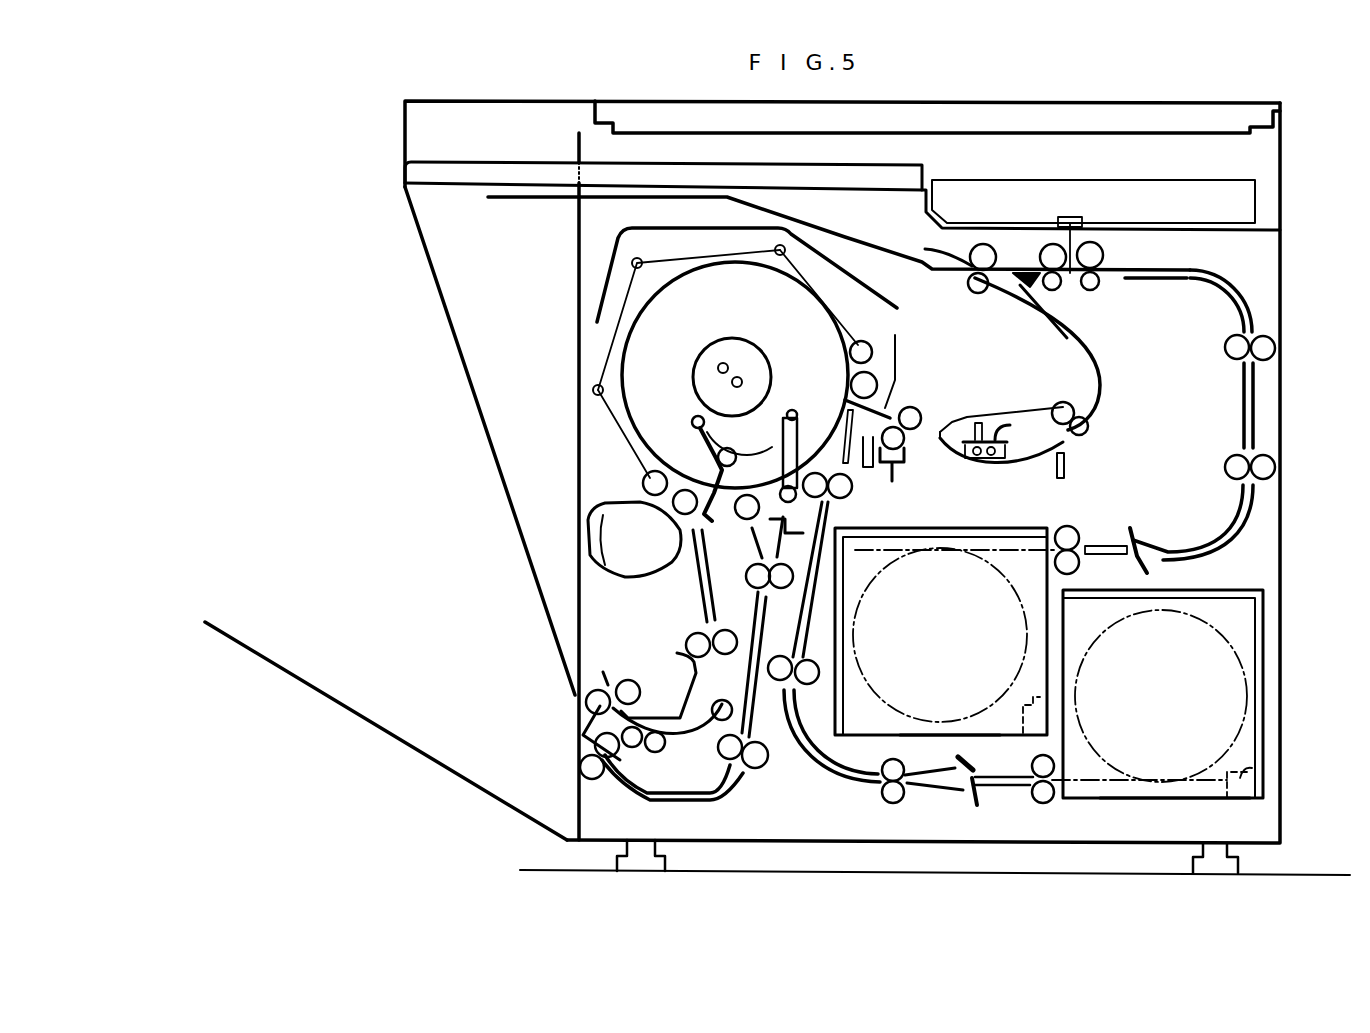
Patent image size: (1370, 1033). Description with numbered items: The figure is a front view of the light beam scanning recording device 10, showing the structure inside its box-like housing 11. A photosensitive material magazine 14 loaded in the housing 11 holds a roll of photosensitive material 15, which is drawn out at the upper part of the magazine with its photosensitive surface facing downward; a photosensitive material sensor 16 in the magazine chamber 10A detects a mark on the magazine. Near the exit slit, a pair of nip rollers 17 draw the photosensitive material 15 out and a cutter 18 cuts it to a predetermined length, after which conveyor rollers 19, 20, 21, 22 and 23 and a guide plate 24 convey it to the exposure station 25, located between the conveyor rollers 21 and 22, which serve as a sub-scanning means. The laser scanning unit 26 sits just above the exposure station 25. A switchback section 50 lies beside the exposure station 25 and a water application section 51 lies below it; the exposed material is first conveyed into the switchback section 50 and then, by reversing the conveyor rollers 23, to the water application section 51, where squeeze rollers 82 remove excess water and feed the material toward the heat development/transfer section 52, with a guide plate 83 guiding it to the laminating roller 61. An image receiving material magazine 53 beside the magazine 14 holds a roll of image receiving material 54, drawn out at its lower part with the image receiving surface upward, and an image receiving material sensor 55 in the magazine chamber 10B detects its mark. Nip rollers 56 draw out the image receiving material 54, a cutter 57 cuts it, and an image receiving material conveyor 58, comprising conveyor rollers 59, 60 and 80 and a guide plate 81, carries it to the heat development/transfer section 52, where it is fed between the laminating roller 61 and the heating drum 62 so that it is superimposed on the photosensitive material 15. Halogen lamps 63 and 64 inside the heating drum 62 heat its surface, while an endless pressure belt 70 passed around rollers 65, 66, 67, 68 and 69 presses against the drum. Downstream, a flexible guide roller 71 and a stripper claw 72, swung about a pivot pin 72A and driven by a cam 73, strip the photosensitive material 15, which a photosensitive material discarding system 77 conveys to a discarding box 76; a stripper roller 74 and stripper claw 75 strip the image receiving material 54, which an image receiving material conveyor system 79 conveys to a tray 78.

The light beam scanning recording device 10 is at (603, 96).
The magazine chamber 10A is at (960, 735).
The magazine chamber 10B is at (1185, 797).
The housing 11 is at (1290, 266).
The photosensitive material magazine 14 is at (785, 773).
The photosensitive material 15 is at (1013, 695).
The photosensitive material sensor 16 is at (1030, 697).
The nip rollers 17 is at (1072, 526).
The cutter 18 is at (1131, 526).
The conveyor roller 19 is at (1272, 474).
The conveyor roller 20 is at (1274, 353).
The conveyor roller 21 is at (1101, 288).
The conveyor roller 22 is at (1058, 289).
The conveyor rollers 23 is at (997, 243).
The guide plate 24 is at (1254, 412).
The exposure station 25 is at (1077, 245).
The laser scanning unit 26 is at (1198, 176).
The switchback section 50 is at (880, 226).
The water application section 51 is at (996, 405).
The heat development/transfer section 52 is at (600, 342).
The image receiving material magazine 53 is at (1266, 631).
The image receiving material 54 is at (1250, 737).
The image receiving material sensor 55 is at (1258, 770).
The nip rollers 56 is at (1050, 798).
The cutter 57 is at (975, 806).
The image receiving material conveyor 58 is at (727, 794).
The conveyor rollers 59 is at (895, 800).
The conveyor rollers 60 is at (810, 680).
The laminating roller 61 is at (873, 383).
The heating drum 62 is at (683, 295).
The halogen lamp 63 is at (720, 365).
The halogen lamp 64 is at (741, 379).
The roller 65 is at (868, 346).
The roller 66 is at (803, 224).
The roller 67 is at (633, 258).
The roller 68 is at (593, 388).
The roller 69 is at (644, 477).
The pressure belt 70 is at (727, 247).
The flexible guide roller 71 is at (676, 500).
The stripper claw 72 is at (672, 546).
The pivot pin 72A is at (690, 447).
The cam 73 is at (756, 447).
The stripper roller 74 is at (748, 521).
The stripper claw 75 is at (790, 500).
The discarding box 76 is at (476, 400).
The photosensitive material discarding system 77 is at (688, 601).
The tray 78 is at (315, 685).
The image receiving material conveyor system 79 is at (778, 612).
The conveyor rollers 80 is at (853, 490).
The guide plate 81 is at (860, 792).
The squeeze rollers 82 is at (921, 416).
The guide plate 83 is at (885, 410).